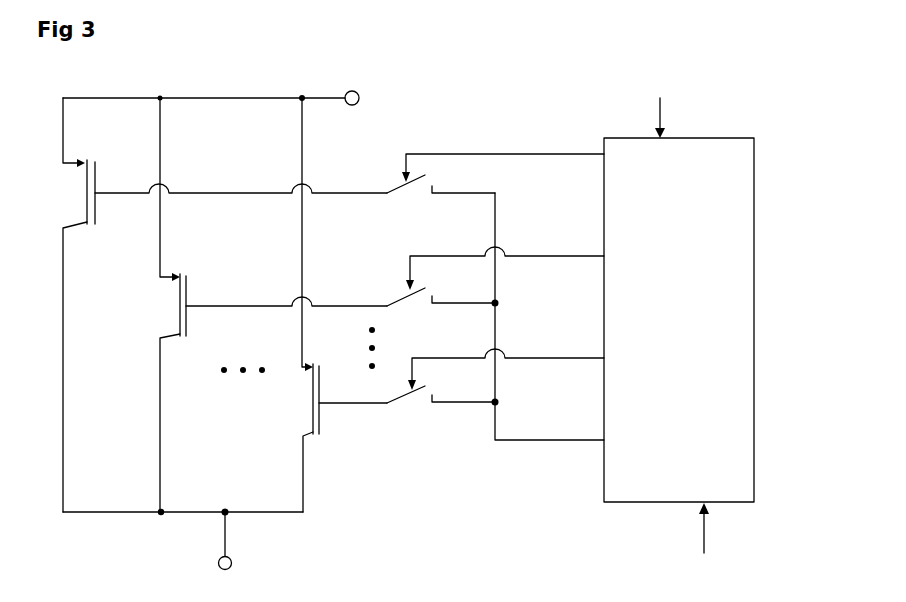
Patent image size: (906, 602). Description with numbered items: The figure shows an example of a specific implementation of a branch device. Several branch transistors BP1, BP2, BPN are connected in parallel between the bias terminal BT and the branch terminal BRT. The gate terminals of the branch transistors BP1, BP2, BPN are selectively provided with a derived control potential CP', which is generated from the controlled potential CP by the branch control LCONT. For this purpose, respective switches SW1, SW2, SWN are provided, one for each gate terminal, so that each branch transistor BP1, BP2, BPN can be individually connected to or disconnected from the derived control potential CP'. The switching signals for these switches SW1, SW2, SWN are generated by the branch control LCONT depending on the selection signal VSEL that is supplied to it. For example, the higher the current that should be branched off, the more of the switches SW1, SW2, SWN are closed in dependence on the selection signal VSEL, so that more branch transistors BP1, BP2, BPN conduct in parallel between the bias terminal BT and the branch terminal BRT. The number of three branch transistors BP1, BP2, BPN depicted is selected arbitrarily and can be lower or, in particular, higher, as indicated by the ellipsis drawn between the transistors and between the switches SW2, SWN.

The bias terminal BT is at (359, 98).
The branch terminal BRT is at (231, 565).
The branch transistor BP1 is at (72, 237).
The branch transistor BP2 is at (170, 342).
The branch transistor BPN is at (312, 437).
The switch SW1 is at (495, 173).
The switch SW2 is at (495, 276).
The switch SWN is at (495, 376).
The derived control potential CP' is at (567, 425).
The branch control LCONT is at (679, 320).
The selection signal VSEL is at (688, 111).
The controlled potential CP is at (719, 532).